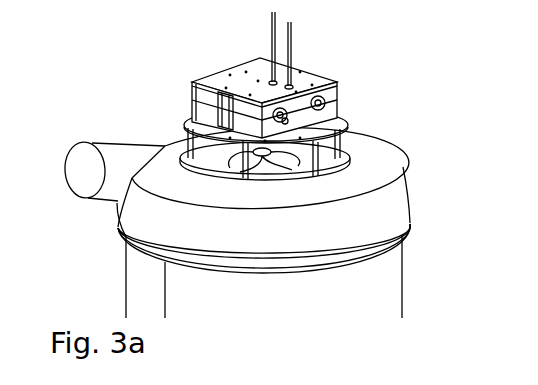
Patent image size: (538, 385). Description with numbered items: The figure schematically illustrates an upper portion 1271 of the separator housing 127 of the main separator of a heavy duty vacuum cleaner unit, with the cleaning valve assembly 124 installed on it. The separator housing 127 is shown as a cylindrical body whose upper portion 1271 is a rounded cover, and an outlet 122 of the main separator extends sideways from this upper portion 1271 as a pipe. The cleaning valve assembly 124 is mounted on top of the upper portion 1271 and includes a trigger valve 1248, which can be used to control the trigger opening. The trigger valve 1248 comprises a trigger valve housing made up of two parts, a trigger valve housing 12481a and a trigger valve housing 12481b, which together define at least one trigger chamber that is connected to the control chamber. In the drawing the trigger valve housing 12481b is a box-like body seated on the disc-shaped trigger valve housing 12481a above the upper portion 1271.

The outlet 122 is at (87, 163).
The cleaning valve assembly 124 is at (150, 92).
The trigger valve 1248 is at (372, 116).
The trigger valve housing 12481a is at (335, 110).
The trigger valve housing 12481b is at (303, 73).
The upper portion 1271 is at (358, 207).
The separator housing 127 is at (355, 296).